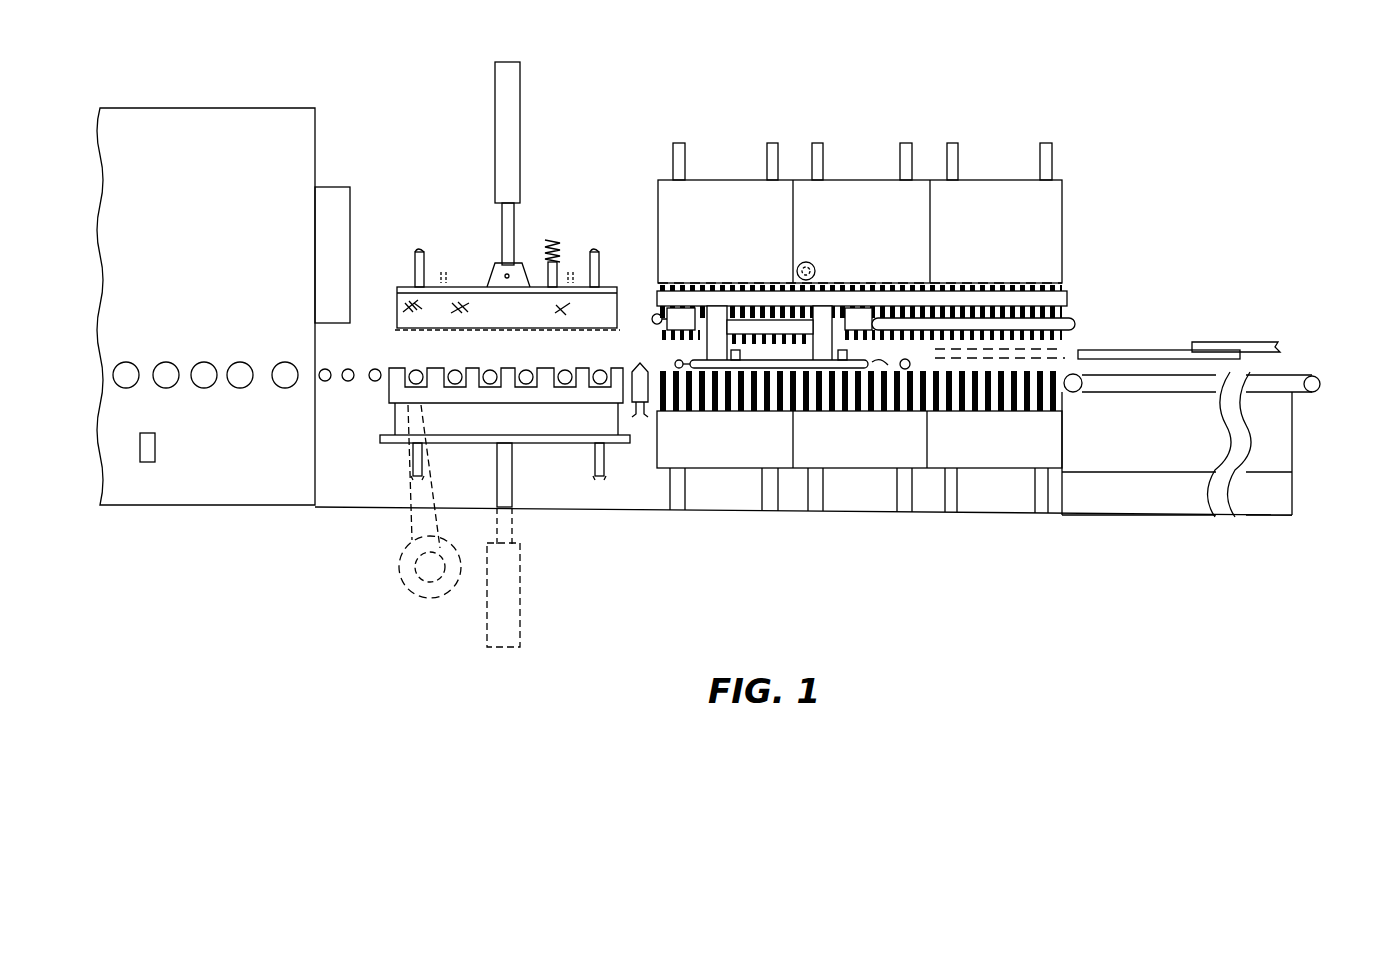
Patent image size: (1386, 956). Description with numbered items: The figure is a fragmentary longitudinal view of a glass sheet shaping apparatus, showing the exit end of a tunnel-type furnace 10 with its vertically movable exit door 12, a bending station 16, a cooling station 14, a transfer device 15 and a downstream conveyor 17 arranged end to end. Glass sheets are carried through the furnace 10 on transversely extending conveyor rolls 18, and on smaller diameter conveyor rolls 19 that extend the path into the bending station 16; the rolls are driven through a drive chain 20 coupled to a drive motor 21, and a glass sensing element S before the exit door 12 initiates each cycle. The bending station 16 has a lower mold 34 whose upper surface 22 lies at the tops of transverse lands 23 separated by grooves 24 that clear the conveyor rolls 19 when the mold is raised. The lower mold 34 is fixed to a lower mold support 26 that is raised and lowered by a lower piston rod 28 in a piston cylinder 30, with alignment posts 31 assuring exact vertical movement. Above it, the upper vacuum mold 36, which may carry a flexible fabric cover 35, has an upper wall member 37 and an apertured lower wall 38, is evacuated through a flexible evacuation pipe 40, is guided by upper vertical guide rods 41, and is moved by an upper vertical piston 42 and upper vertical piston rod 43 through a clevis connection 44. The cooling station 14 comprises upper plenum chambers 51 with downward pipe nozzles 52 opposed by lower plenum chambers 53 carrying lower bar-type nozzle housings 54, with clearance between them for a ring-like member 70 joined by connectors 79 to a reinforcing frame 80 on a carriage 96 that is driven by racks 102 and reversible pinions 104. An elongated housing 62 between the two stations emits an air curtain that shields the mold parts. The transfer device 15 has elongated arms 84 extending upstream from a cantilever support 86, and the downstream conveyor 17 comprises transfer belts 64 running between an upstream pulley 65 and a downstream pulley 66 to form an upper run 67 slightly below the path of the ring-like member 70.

The tunnel-type furnace 10 is at (196, 100).
The vertically movable exit door 12 is at (329, 187).
The cooling station 14 is at (826, 118).
The transfer device 15 is at (1064, 348).
The bending station 16 is at (516, 174).
The downstream conveyor 17 is at (1258, 398).
The conveyor rolls 18 is at (204, 362).
The smaller diameter conveyor rolls 19 is at (596, 368).
The drive chain 20 is at (406, 519).
The drive motor 21 is at (400, 572).
The upper surface 22 is at (424, 368).
The lands 23 is at (460, 372).
The grooves 24 is at (496, 372).
The lower mold support 26 is at (556, 433).
The lower piston rod 28 is at (513, 490).
The piston cylinder 30 is at (520, 596).
The alignment posts 31 is at (413, 458).
The lower mold 34 is at (473, 382).
The flexible fabric cover 35 is at (397, 305).
The upper vacuum mold 36 is at (396, 331).
The upper wall member 37 is at (611, 288).
The lower wall 38 is at (565, 330).
The flexible evacuation pipe 40 is at (561, 242).
The upper vertical guide rods 41 is at (415, 265).
The upper vertical piston 42 is at (495, 113).
The upper vertical piston rod 43 is at (502, 218).
The clevis connection 44 is at (492, 268).
The upper plenum chambers 51 is at (720, 180).
The pipe nozzles 52 is at (694, 334).
The lower plenum chamber 53 is at (872, 460).
The lower bar-type nozzle housing 54 is at (1008, 393).
The elongated housing 62 is at (641, 362).
The transfer belts 64 is at (1150, 397).
The upstream pulley 65 is at (1076, 392).
The downstream pulley 66 is at (1320, 385).
The upper run 67 is at (1293, 376).
The ring-like member 70 is at (782, 360).
The connectors 79 is at (889, 352).
The reinforcing frame 80 is at (917, 361).
The elongated arms 84 is at (1170, 350).
The cantilever support 86 is at (1226, 342).
The carriage 96 is at (716, 318).
The rack 102 is at (757, 283).
The reversible pinions 104 is at (812, 264).
The glass sensing element S is at (157, 446).